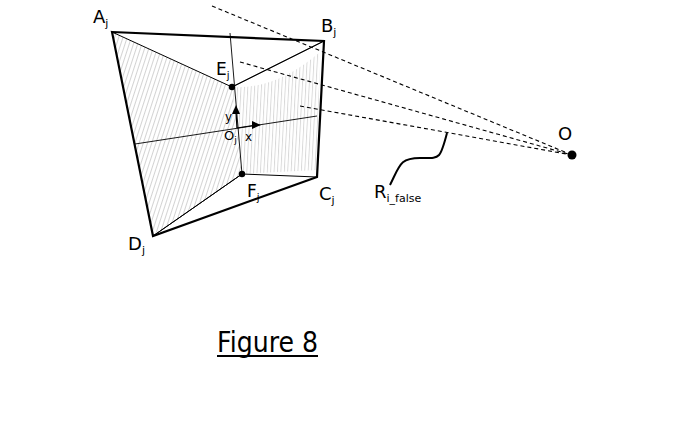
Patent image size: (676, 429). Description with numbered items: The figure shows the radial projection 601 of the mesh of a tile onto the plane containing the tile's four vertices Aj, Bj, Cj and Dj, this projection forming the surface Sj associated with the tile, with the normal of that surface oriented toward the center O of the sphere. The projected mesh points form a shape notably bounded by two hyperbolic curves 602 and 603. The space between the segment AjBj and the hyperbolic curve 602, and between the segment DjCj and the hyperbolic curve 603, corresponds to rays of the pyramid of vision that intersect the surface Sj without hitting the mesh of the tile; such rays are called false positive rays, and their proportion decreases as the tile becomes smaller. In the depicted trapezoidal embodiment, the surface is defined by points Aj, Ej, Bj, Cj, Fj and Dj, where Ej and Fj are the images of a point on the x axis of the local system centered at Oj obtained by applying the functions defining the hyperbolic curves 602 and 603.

The radial projection 601 is at (148, 114).
The hyperbolic curve 602 is at (240, 86).
The hyperbolic curve 603 is at (228, 183).